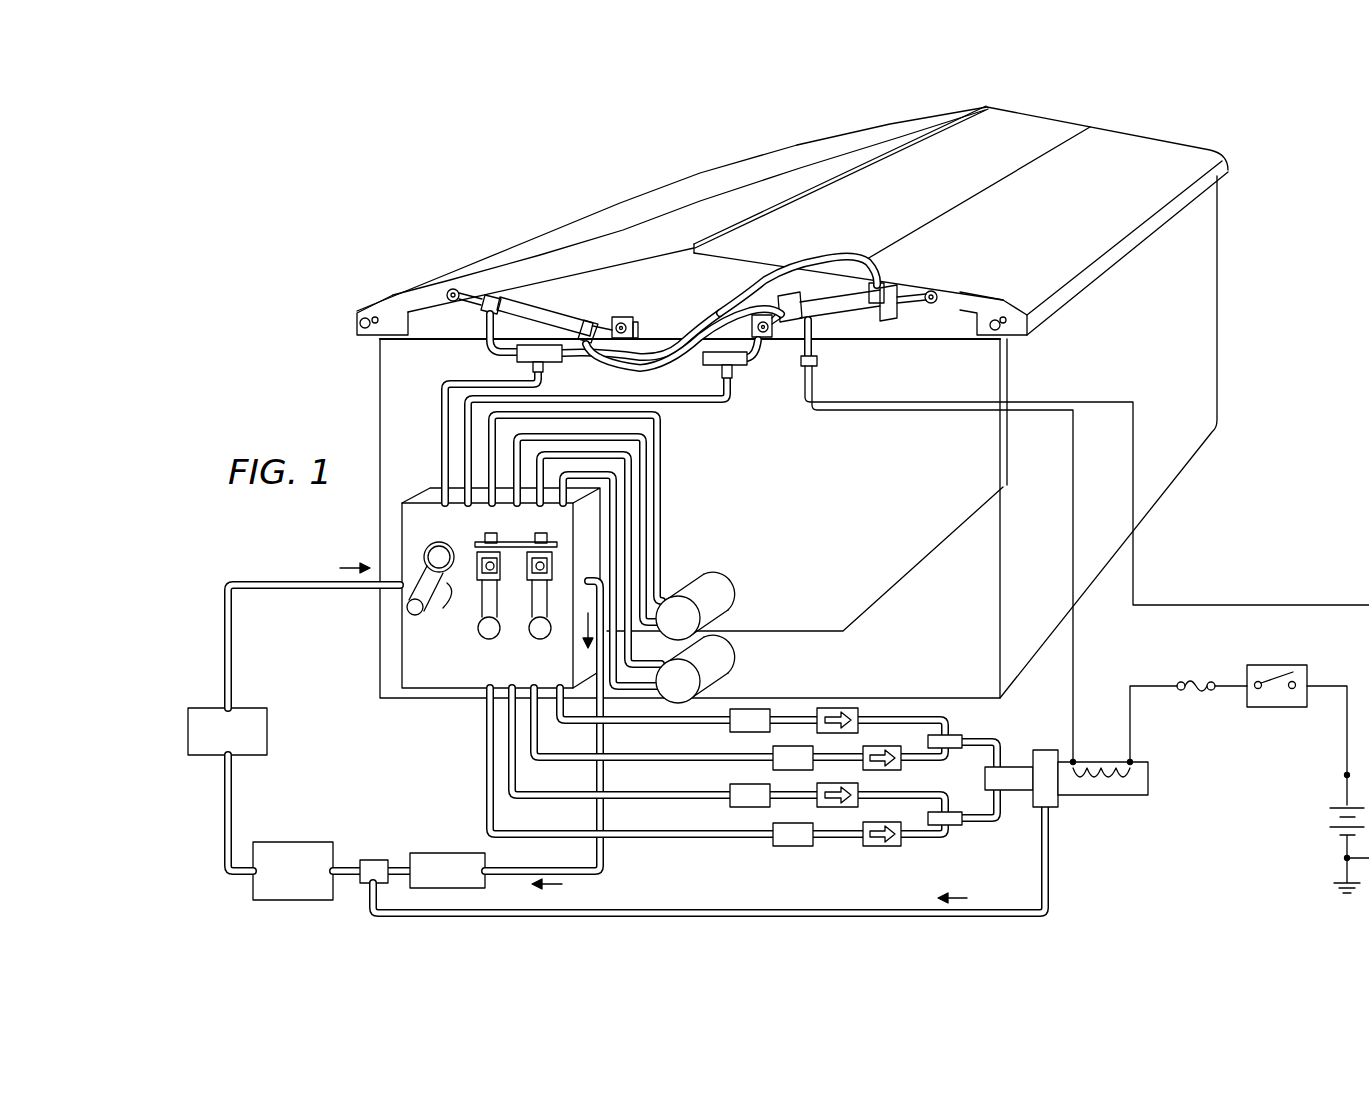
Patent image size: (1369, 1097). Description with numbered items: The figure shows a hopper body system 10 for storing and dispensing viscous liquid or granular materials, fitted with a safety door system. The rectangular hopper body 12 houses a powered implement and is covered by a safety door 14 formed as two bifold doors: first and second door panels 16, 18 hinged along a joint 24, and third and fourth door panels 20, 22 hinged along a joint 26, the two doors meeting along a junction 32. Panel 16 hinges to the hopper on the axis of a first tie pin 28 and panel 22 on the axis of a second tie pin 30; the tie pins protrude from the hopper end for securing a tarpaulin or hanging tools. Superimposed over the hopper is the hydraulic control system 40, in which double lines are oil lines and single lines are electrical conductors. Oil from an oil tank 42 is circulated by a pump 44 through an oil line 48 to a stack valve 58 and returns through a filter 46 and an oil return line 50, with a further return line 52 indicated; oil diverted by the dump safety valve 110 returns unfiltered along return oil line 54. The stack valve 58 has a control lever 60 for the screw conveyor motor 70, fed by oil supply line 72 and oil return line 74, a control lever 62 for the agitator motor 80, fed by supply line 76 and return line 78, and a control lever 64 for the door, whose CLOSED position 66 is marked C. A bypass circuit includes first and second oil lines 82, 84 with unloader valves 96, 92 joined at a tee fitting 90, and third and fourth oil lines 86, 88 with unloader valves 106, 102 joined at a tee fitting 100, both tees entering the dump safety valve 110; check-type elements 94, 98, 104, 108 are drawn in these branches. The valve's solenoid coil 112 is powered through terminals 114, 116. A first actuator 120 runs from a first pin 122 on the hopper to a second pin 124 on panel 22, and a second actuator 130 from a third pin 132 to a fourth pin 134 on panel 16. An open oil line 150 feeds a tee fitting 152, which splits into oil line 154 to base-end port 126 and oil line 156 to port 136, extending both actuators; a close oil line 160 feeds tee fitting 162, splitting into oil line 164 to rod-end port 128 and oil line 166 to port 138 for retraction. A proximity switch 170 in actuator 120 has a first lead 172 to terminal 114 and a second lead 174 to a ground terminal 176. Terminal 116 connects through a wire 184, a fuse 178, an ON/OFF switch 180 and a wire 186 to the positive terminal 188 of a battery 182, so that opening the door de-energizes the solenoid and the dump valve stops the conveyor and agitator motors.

The hopper body system 10 is at (1230, 465).
The hopper body 12 is at (1157, 500).
The safety door 14 is at (783, 245).
The first door panel 16 is at (720, 166).
The second door panel 18 is at (880, 126).
The third door panel 20 is at (1073, 123).
The fourth door panel 22 is at (1195, 148).
The joint 24 is at (623, 228).
The joint 26 is at (970, 197).
The first tie pin 28 is at (362, 338).
The second tie pin 30 is at (995, 318).
The junction 32 is at (858, 166).
The hydraulic control system 40 is at (1067, 862).
The oil tank 42 is at (272, 842).
The pump 44 is at (188, 726).
The filter 46 is at (446, 853).
The oil line 48 is at (228, 652).
The oil return line 50 is at (366, 860).
The return line 52 is at (596, 822).
The return oil line 54 is at (1052, 903).
The stack valve 58 is at (470, 588).
The control lever 60 is at (532, 640).
The control lever 62 is at (480, 640).
The control lever 64 is at (420, 556).
The CLOSED position 66 is at (429, 602).
The screw conveyor motor 70 is at (735, 668).
The oil supply line 72 is at (633, 518).
The oil return line 74 is at (618, 548).
The oil supply line 76 is at (663, 456).
The oil return line 78 is at (648, 488).
The agitator motor 80 is at (735, 590).
The first oil line 82 is at (628, 797).
The second oil line 84 is at (655, 759).
The third oil line 86 is at (486, 712).
The fourth oil line 88 is at (494, 752).
The tee fitting 90 is at (965, 737).
The unloader valve 92 is at (730, 735).
The check valve 94 is at (838, 708).
The unloader valve 96 is at (795, 746).
The check valve 98 is at (880, 746).
The tee fitting 100 is at (965, 826).
The unloader valve 102 is at (742, 807).
The check valve 104 is at (835, 808).
The unloader valve 106 is at (792, 847).
The check valve 108 is at (885, 847).
The dump safety valve 110 is at (1045, 750).
The solenoid coil 112 is at (1118, 783).
The first terminal 114 is at (1075, 761).
The terminal 116 is at (1133, 761).
The first hydraulic actuating cylinder 120 is at (855, 293).
The first pin 122 is at (760, 338).
The second pin 124 is at (931, 290).
The port 126 is at (783, 266).
The port 128 is at (886, 283).
The second hydraulic actuating cylinder 130 is at (556, 263).
The third pin 132 is at (636, 320).
The fourth pin 134 is at (450, 289).
The port 136 is at (614, 316).
The port 138 is at (493, 297).
The open oil line 150 is at (465, 428).
The tee fitting 152 is at (732, 378).
The oil line 154 is at (733, 302).
The oil line 156 is at (730, 386).
The close oil line 160 is at (442, 410).
The tee fitting 162 is at (555, 362).
The oil line 164 is at (843, 252).
The oil line 166 is at (487, 345).
The proximity switch 170 is at (818, 362).
The first lead 172 is at (1070, 548).
The second lead 174 is at (1128, 400).
The ground terminal 176 is at (1342, 858).
The fuse 178 is at (1197, 683).
The ON/OFF switch 180 is at (1270, 707).
The battery 182 is at (1335, 818).
The wire 184 is at (1135, 686).
The wire 186 is at (1336, 686).
The positive terminal 188 is at (1344, 776).